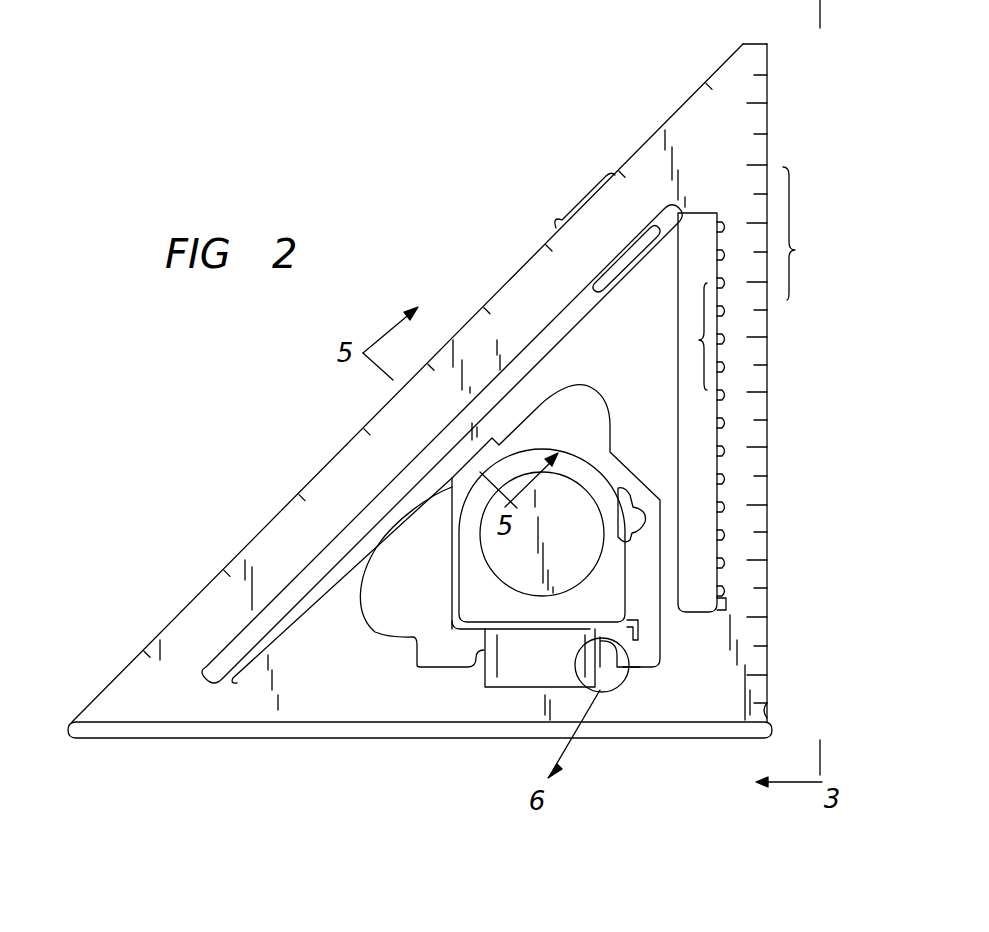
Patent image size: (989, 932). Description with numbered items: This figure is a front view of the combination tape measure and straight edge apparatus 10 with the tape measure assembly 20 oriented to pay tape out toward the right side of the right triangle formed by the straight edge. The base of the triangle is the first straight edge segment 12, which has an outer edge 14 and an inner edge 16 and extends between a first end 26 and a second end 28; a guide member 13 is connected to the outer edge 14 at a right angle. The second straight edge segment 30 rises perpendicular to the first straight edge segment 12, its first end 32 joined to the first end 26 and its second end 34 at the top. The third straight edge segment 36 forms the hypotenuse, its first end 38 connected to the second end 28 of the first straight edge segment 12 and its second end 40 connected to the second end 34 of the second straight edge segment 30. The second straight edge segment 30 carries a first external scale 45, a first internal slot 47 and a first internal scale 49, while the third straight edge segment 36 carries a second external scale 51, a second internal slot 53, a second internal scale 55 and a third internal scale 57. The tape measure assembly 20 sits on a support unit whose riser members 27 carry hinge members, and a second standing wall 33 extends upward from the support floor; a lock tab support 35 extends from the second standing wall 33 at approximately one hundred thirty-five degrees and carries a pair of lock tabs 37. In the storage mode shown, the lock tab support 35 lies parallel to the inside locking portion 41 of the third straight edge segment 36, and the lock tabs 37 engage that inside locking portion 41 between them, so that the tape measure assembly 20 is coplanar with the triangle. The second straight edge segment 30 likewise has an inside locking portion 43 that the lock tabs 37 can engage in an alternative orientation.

The combination tape measure and straight edge apparatus 10 is at (412, 270).
The first straight edge segment 12 is at (425, 710).
The guide member 13 is at (230, 730).
The outer edge 14 is at (157, 720).
The inner edge 16 is at (438, 668).
The tape measure assembly 20 is at (613, 590).
The first end 26 is at (710, 705).
The riser members 27 is at (497, 643).
The second end 28 is at (183, 692).
The second straight edge segment 30 is at (743, 377).
The first end 32 is at (740, 550).
The second standing wall 33 is at (452, 488).
The second end 34 is at (730, 132).
The lock tab support 35 is at (500, 440).
The third straight edge segment 36 is at (472, 360).
The lock tabs 37 is at (467, 443).
The first end 38 is at (270, 565).
The second end 40 is at (638, 195).
The inside locking portion 41 is at (512, 405).
The inside locking portion 43 is at (643, 460).
The first external scale 45 is at (811, 233).
The first internal slot 47 is at (702, 213).
The first internal scale 49 is at (699, 340).
The second external scale 51 is at (565, 218).
The second internal slot 53 is at (320, 553).
The second internal scale 55 is at (603, 280).
The third internal scale 57 is at (262, 642).